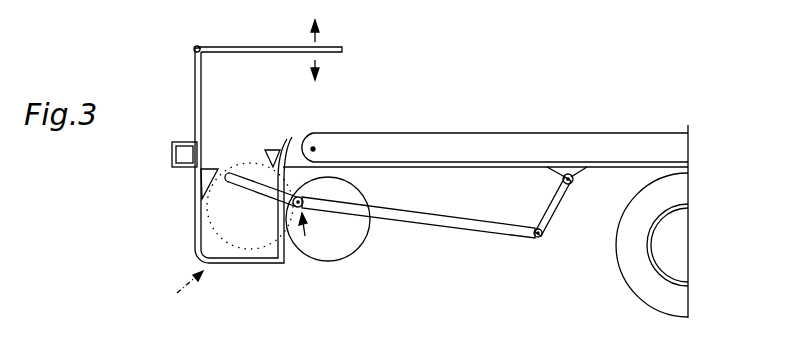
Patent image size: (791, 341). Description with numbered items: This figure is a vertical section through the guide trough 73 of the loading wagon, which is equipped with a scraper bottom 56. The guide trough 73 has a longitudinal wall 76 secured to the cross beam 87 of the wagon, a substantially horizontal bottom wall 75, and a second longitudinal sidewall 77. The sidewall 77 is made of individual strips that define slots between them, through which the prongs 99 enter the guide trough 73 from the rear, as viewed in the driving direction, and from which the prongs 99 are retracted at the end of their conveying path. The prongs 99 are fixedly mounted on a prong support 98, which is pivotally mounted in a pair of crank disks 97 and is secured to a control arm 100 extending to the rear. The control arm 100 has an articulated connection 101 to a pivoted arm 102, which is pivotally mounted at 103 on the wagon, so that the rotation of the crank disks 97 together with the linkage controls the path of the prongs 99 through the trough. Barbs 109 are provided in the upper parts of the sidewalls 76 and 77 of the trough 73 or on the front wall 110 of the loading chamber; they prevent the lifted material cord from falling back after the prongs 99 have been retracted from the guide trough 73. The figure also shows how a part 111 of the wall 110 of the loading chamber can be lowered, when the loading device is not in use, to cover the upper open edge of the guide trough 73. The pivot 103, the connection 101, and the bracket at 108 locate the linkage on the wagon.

The scraper bottom 56 is at (463, 133).
The guide trough 73 is at (183, 295).
The bottom wall 75 is at (247, 263).
The longitudinal wall 76 is at (133, 238).
The second longitudinal sidewall 77 is at (280, 226).
The cross beam 87 is at (173, 166).
The crank disks 97 is at (345, 247).
The prong support 98 is at (297, 208).
The prongs 99 is at (256, 195).
The control arm 100 is at (465, 222).
The articulated connection 101 is at (538, 238).
The pivoted arm 102 is at (555, 210).
The pivot 103 is at (572, 184).
The bracket 108 is at (583, 168).
The barbs 109 is at (197, 202).
The front wall 110 is at (193, 72).
The part of the wall 111 is at (243, 47).